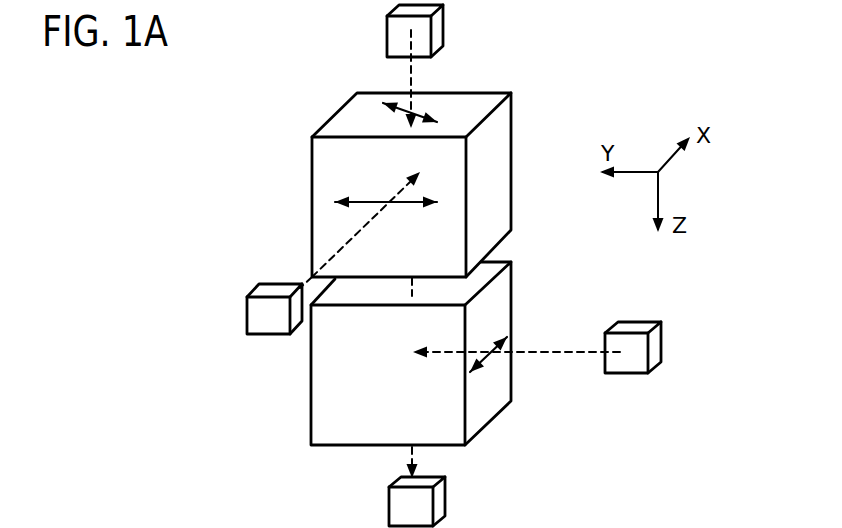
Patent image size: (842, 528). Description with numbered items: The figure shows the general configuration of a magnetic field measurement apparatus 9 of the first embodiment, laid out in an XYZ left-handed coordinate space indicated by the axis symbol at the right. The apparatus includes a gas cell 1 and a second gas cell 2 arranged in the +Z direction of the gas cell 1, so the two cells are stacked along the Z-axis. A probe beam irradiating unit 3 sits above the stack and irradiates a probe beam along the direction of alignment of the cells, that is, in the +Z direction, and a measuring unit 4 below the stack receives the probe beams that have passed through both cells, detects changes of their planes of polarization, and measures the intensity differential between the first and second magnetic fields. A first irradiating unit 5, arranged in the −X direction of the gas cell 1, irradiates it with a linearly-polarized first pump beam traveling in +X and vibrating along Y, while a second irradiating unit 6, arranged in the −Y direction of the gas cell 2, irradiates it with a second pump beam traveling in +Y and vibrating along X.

The gas cell 1 is at (500, 172).
The gas cell 2 is at (500, 318).
The probe beam irradiating unit 3 is at (443, 27).
The measuring unit 4 is at (438, 503).
The first irradiating unit 5 is at (247, 310).
The second irradiating unit 6 is at (661, 330).
The magnetic field measurement apparatus 9 is at (611, 457).